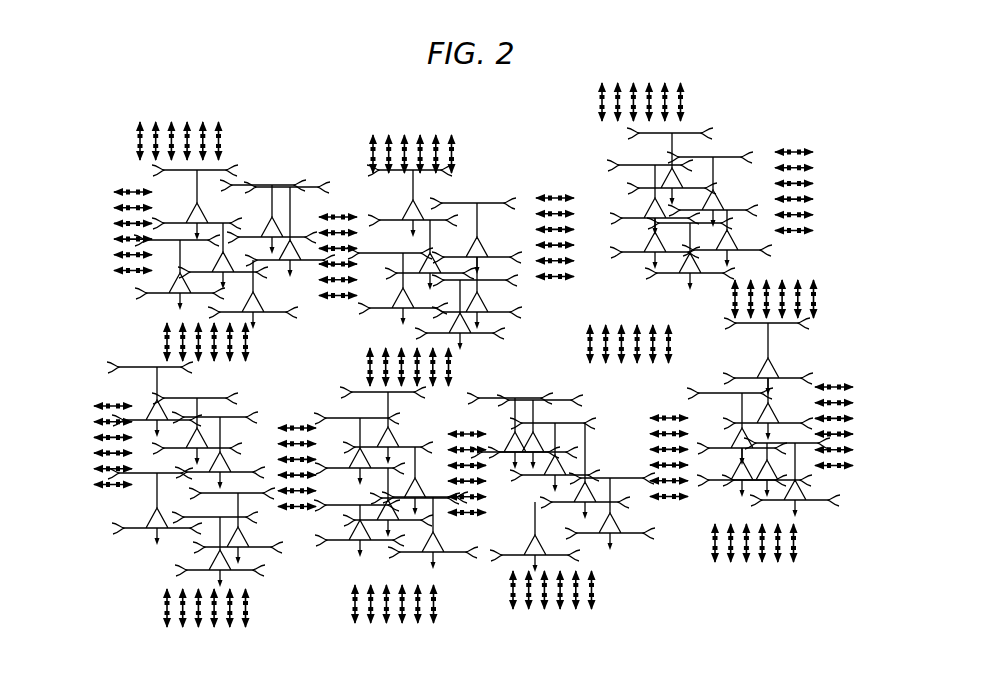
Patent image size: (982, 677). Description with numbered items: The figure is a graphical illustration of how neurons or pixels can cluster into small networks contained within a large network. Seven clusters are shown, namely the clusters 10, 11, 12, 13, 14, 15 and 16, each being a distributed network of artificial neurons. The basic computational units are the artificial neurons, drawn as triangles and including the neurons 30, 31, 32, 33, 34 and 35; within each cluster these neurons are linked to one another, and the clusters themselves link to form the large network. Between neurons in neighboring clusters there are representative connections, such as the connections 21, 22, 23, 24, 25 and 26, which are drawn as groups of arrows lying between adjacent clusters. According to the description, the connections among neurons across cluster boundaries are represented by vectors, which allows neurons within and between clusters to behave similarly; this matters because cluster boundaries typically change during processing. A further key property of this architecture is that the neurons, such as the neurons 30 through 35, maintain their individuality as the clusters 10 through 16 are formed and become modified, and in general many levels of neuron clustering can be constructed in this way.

The cluster 10 is at (101, 213).
The cluster 11 is at (472, 187).
The cluster 12 is at (757, 136).
The cluster 13 is at (813, 373).
The cluster 14 is at (616, 572).
The cluster 15 is at (448, 566).
The cluster 16 is at (266, 567).
The connection 21 is at (336, 210).
The connection 22 is at (410, 134).
The connection 23 is at (550, 192).
The connection 24 is at (250, 346).
The connection 25 is at (452, 365).
The connection 26 is at (583, 346).
The artificial neuron 30 is at (165, 300).
The artificial neuron 31 is at (146, 534).
The artificial neuron 32 is at (396, 317).
The artificial neuron 33 is at (351, 549).
The artificial neuron 34 is at (531, 537).
The artificial neuron 35 is at (623, 542).